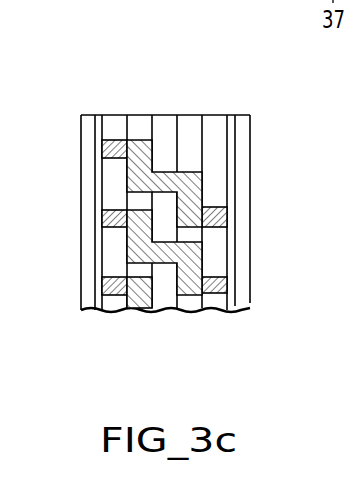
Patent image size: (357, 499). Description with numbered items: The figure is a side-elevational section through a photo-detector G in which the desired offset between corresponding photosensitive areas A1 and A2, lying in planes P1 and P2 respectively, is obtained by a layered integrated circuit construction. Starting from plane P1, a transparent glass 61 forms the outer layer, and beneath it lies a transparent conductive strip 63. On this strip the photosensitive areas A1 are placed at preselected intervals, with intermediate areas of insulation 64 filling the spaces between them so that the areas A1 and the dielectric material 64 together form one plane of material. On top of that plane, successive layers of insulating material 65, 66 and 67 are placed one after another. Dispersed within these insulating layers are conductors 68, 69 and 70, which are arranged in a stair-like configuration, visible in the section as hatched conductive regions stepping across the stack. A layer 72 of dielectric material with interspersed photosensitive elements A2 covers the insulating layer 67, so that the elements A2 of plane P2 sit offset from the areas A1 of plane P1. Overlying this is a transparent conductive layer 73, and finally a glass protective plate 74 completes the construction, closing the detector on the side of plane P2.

The photo-detector G is at (134, 58).
The plane P1 is at (80, 122).
The plane P2 is at (250, 133).
The transparent glass 61 is at (88, 290).
The transparent conductive strip 63 is at (97, 250).
The insulation 64 is at (113, 180).
The insulating material layer 65 is at (140, 268).
The insulating material layer 66 is at (165, 278).
The insulating material layer 67 is at (190, 125).
The conductor 68 is at (141, 157).
The conductor 69 is at (162, 182).
The conductor 70 is at (192, 200).
The dielectric material layer 72 is at (222, 250).
The transparent conductive layer 73 is at (230, 268).
The glass protective plate 74 is at (250, 302).
The photosensitive areas A1 is at (113, 137).
The photosensitive elements A2 is at (227, 222).